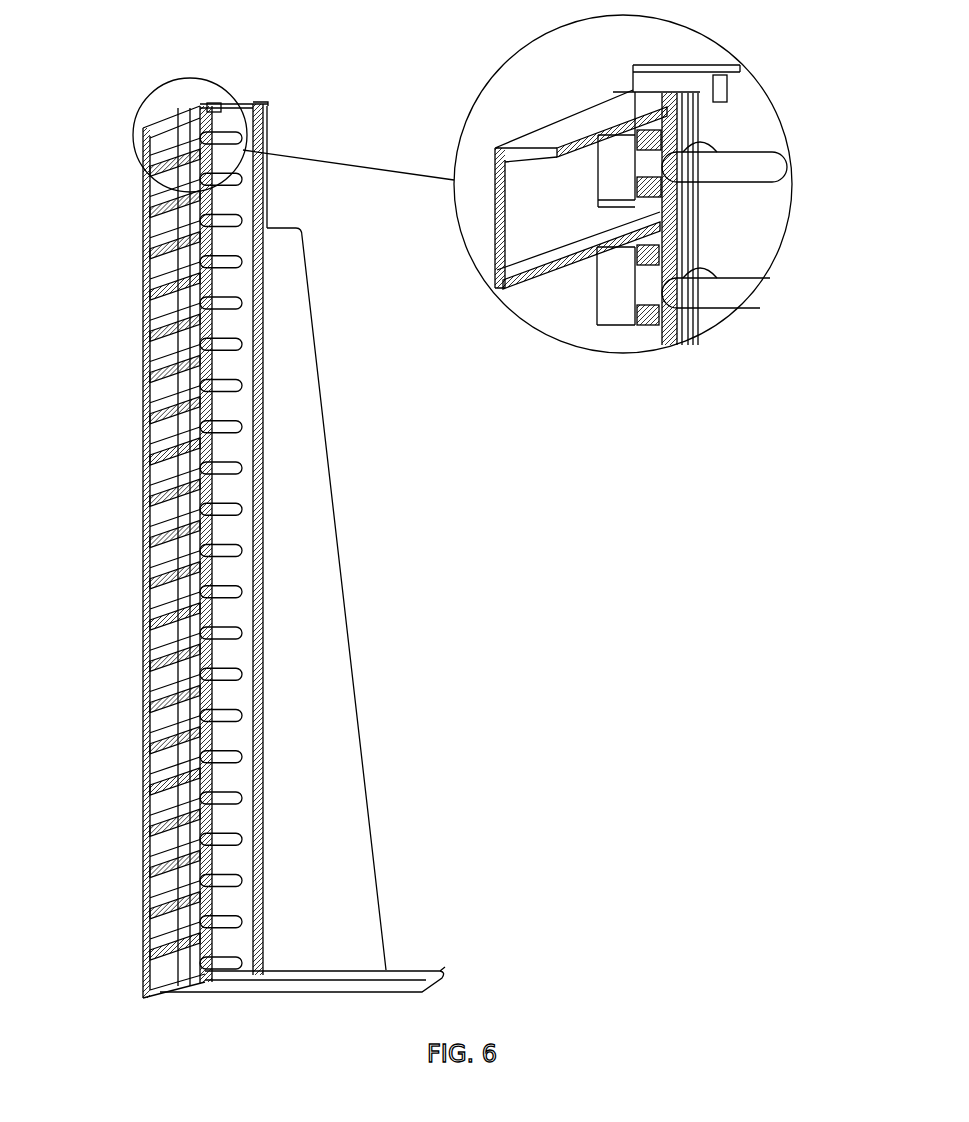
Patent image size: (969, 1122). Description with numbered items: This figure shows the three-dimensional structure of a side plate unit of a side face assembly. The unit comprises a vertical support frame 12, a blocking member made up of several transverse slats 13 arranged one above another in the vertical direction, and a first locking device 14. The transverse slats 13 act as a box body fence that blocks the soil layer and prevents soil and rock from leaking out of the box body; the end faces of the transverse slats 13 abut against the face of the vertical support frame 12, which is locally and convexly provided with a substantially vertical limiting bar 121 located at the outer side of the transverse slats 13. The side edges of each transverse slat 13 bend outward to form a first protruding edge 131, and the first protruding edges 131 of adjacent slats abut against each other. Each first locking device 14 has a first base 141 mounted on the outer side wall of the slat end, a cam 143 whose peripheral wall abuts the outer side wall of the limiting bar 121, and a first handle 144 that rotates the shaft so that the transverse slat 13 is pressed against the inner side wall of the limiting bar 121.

The vertical support frame 12 is at (302, 594).
The transverse slat 13 is at (142, 489).
The first locking device 14 is at (243, 667).
The limiting bar 121 is at (722, 102).
The first protruding edge 131 is at (563, 130).
The first base 141 is at (636, 95).
The cam 143 is at (700, 147).
The first handle 144 is at (790, 167).